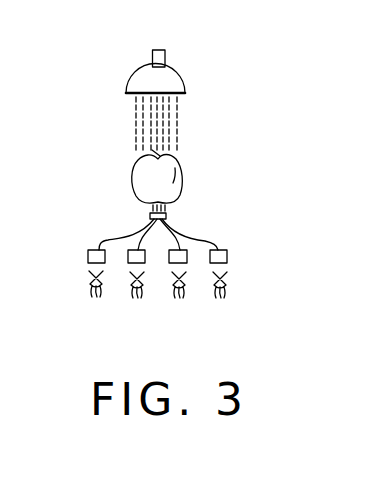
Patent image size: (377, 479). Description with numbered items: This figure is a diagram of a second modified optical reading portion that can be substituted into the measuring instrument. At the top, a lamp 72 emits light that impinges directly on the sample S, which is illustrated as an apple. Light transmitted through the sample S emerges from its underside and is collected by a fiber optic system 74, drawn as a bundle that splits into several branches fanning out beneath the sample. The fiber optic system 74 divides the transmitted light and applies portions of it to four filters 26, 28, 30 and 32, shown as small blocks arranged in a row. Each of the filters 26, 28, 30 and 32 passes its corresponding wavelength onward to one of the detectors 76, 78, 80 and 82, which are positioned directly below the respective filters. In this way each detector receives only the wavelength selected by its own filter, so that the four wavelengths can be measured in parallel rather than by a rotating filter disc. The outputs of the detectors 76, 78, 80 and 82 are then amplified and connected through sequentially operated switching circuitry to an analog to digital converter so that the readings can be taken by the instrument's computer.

The lamp 72 is at (180, 76).
The sample S is at (172, 181).
The fiber optic system 74 is at (122, 237).
The filter 26 is at (88, 258).
The filter 28 is at (149, 288).
The filter 30 is at (191, 287).
The filter 32 is at (227, 258).
The detector 76 is at (105, 286).
The detector 78 is at (145, 263).
The detector 80 is at (187, 258).
The detector 82 is at (227, 260).